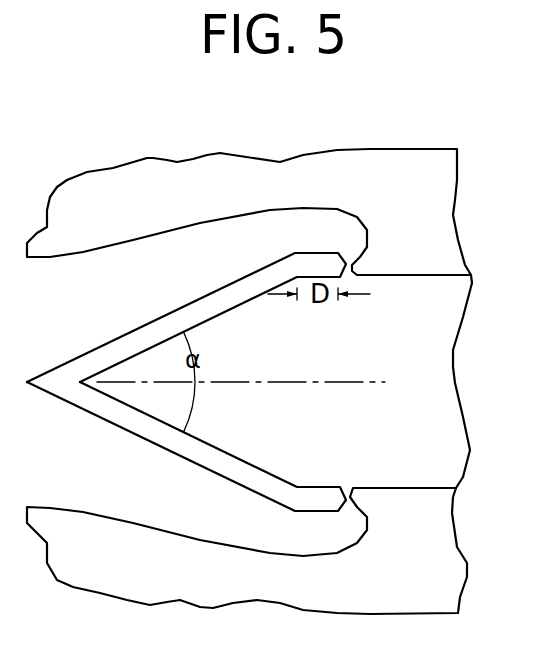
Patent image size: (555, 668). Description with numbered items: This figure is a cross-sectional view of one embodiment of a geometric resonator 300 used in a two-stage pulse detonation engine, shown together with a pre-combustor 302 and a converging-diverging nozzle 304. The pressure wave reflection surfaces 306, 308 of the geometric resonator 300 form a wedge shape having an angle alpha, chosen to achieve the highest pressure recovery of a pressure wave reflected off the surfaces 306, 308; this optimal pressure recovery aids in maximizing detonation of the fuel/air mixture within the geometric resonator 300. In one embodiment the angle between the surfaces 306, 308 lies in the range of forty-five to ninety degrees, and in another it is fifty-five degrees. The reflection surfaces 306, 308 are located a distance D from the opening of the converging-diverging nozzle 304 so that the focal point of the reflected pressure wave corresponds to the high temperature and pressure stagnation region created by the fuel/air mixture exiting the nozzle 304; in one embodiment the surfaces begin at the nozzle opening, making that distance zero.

The geometric resonator 300 is at (220, 382).
The pre-combustor 302 is at (175, 243).
The converging-diverging nozzle 304 is at (353, 268).
The pressure wave reflection surface 306 is at (230, 312).
The pressure wave reflection surface 308 is at (243, 458).